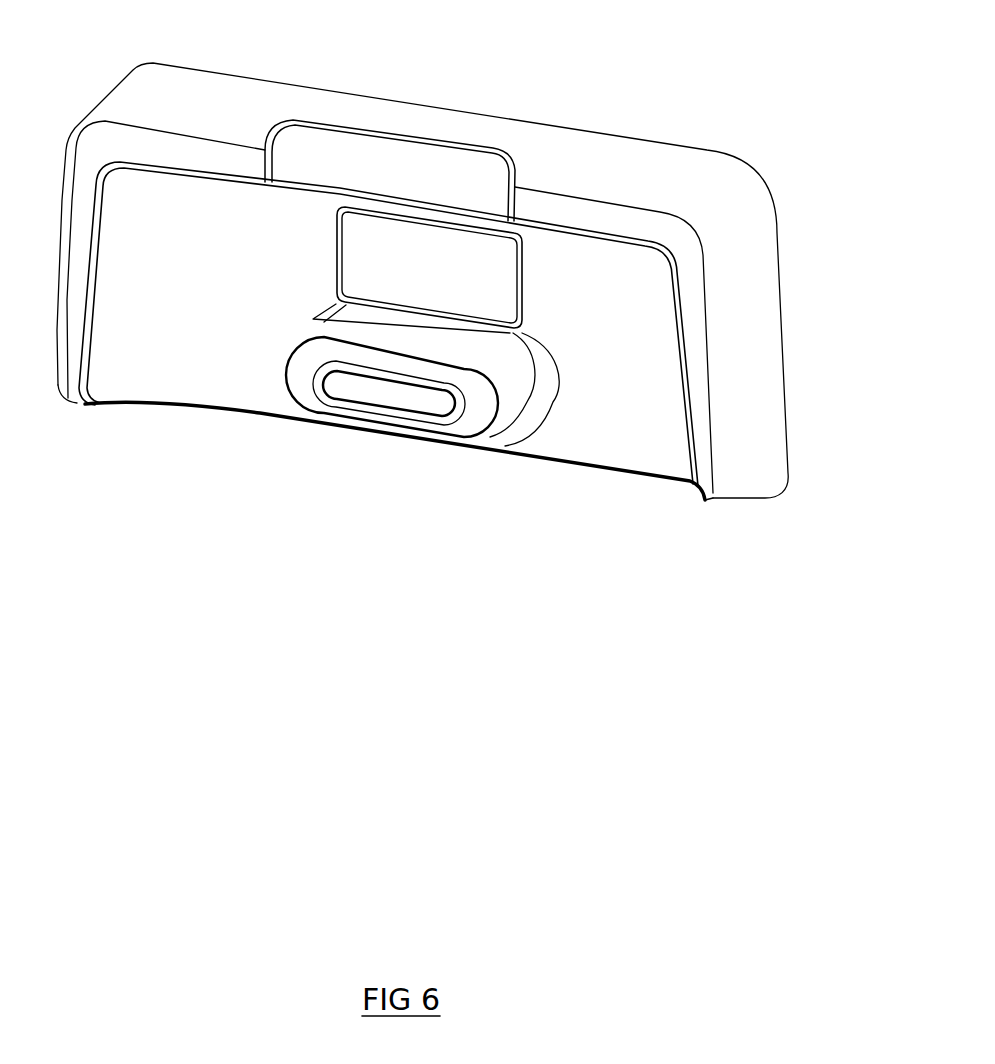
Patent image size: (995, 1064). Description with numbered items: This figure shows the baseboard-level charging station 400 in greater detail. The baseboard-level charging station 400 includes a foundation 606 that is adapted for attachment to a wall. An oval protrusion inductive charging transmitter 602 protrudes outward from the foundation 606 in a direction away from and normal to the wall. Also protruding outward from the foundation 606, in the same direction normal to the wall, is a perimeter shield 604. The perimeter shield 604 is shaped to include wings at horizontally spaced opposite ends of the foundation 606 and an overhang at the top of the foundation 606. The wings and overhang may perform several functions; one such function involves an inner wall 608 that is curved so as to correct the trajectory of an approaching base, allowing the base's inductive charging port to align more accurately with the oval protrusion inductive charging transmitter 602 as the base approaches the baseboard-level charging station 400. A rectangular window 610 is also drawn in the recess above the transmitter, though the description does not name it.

The baseboard-level charging station 400 is at (770, 103).
The oval protrusion inductive charging transmitter 602 is at (390, 420).
The perimeter shield 604 is at (740, 388).
The foundation 606 is at (592, 469).
The inner wall 608 is at (382, 303).
The window opening 610 is at (440, 250).